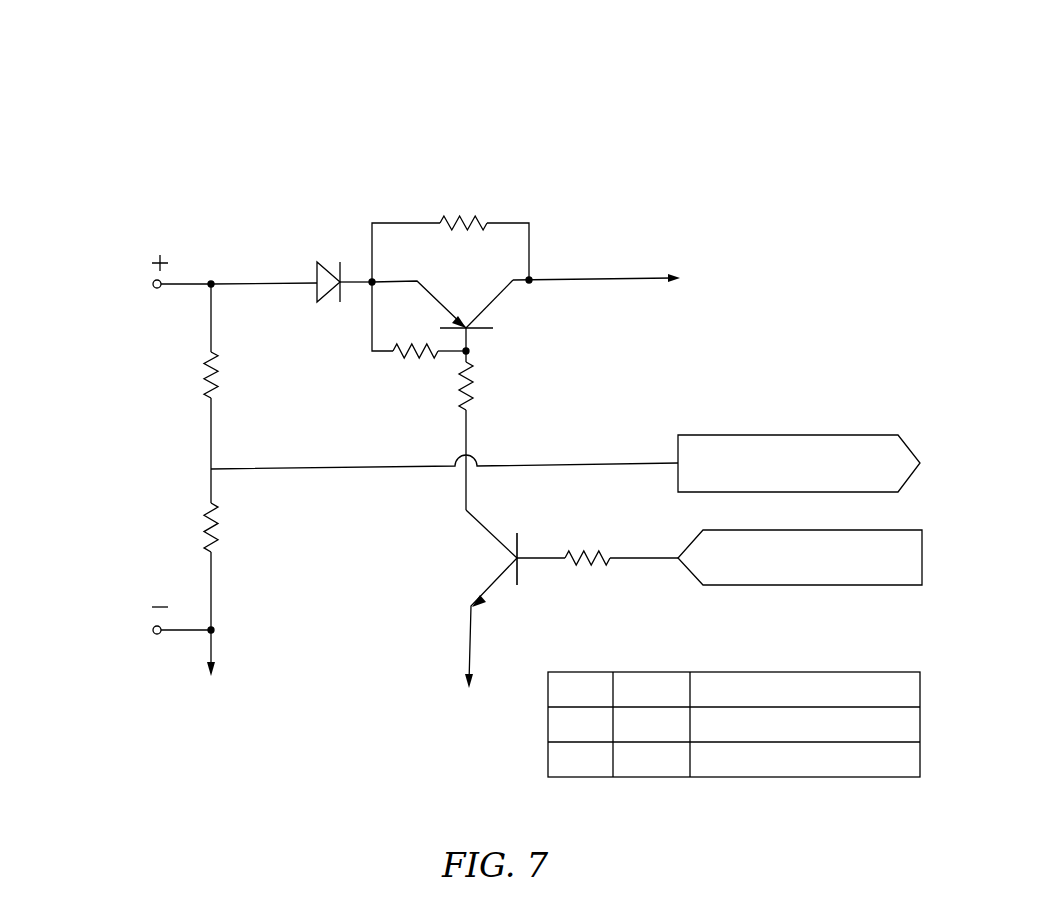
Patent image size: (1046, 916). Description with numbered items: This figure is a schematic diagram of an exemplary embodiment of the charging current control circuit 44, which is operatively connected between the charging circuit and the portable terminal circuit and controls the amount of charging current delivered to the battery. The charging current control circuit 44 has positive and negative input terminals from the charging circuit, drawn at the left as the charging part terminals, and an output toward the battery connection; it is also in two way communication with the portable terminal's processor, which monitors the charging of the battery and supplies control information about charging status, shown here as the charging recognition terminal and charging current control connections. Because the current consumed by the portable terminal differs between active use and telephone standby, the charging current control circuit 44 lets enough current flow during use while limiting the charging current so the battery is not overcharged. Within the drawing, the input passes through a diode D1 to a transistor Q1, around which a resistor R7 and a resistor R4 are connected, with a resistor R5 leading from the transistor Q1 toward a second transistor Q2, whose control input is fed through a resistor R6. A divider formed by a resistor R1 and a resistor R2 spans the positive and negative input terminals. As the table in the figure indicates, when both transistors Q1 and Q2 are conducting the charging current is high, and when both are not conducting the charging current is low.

The charging current control circuit 44 is at (594, 114).
The resistor R1 is at (194, 376).
The resistor R2 is at (194, 568).
The resistor R4 is at (419, 338).
The resistor R5 is at (482, 430).
The resistor R6 is at (621, 543).
The resistor R7 is at (450, 234).
The diode D1 is at (341, 266).
The transistor Q1 is at (442, 315).
The transistor Q2 is at (502, 596).